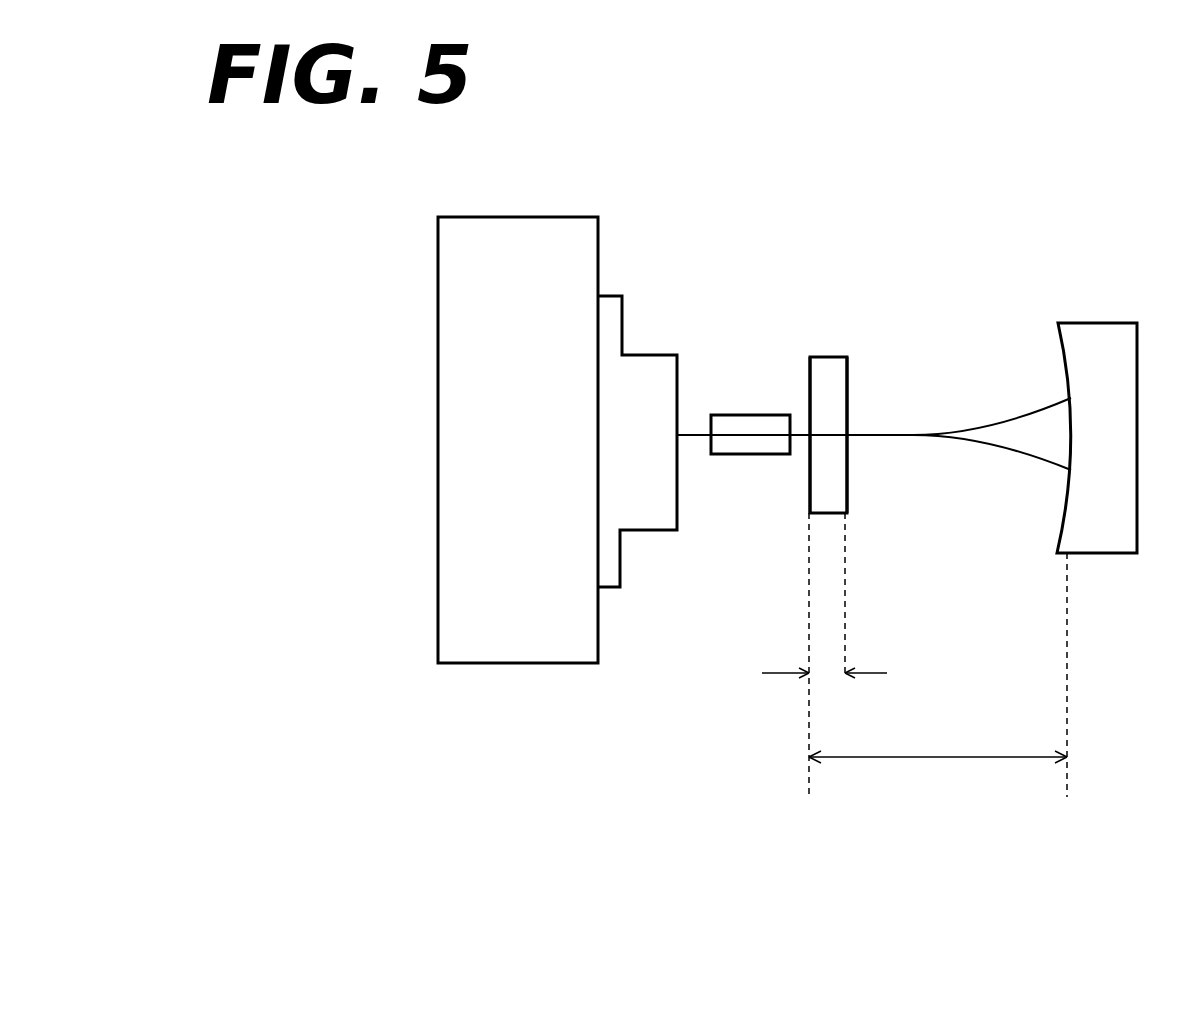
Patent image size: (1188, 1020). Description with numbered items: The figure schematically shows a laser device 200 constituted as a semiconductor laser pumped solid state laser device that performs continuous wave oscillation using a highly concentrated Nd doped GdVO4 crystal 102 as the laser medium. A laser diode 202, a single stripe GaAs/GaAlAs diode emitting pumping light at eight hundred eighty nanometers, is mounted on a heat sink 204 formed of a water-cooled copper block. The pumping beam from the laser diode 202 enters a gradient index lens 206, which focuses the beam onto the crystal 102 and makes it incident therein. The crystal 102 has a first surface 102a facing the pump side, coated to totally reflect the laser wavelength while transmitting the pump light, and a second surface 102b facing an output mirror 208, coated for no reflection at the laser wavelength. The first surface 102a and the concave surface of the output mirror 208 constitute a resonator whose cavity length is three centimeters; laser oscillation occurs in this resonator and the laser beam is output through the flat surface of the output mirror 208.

The laser device 200 is at (970, 138).
The heat sink 204 is at (530, 217).
The laser diode 202 is at (623, 320).
The gradient index lens 206 is at (725, 415).
The highly concentrated Nd doped GdVO4 crystal 102 is at (828, 357).
The first surface 102a is at (808, 498).
The second surface 102b is at (845, 490).
The output mirror 208 is at (1078, 323).